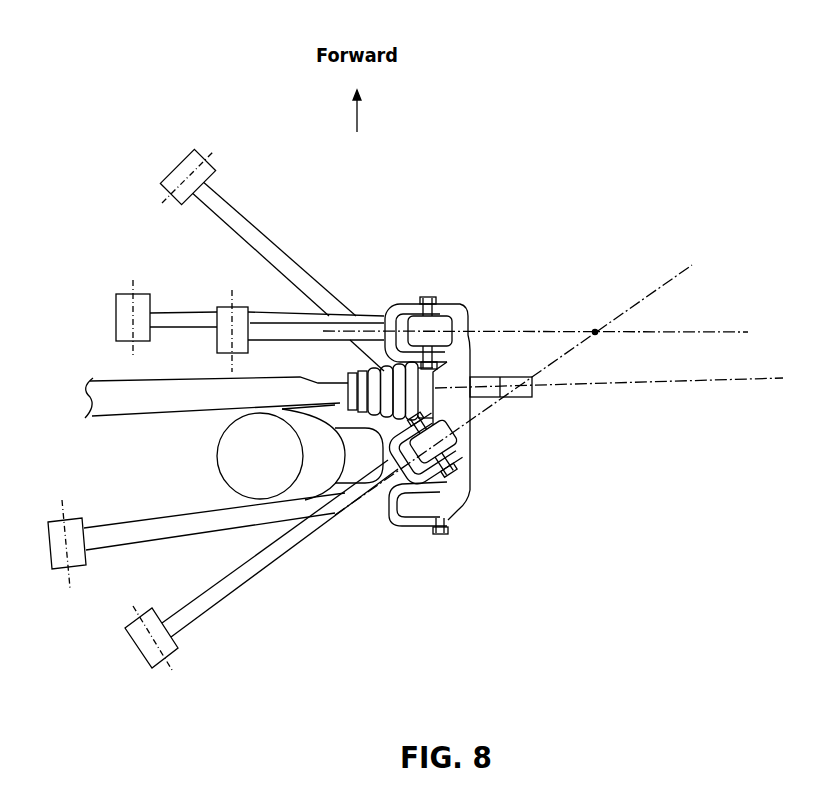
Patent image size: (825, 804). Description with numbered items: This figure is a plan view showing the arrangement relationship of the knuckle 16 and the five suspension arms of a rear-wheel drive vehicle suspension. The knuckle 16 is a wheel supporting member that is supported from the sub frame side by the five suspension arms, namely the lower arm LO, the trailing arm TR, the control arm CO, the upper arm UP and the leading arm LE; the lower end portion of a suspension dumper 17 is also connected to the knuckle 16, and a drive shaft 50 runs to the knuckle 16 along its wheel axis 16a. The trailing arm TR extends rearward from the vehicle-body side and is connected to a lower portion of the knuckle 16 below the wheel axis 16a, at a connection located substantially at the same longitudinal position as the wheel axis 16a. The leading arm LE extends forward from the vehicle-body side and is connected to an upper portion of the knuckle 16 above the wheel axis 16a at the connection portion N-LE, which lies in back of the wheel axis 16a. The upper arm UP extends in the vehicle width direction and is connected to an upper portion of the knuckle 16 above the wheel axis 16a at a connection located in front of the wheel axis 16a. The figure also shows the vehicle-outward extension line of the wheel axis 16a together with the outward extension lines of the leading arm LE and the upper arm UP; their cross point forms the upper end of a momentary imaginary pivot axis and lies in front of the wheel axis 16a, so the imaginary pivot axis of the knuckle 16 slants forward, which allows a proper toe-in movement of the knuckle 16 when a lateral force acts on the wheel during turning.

The trailing arm TR is at (236, 218).
The lower arm LO is at (177, 311).
The upper arm UP is at (283, 331).
The control arm CO is at (144, 531).
The leading arm LE is at (218, 595).
The drive shaft 50 is at (110, 387).
The suspension dumper 17 is at (225, 452).
The knuckle 16 is at (467, 488).
The wheel axis 16a is at (524, 389).
The connection portion of the leading arm N-LE is at (448, 443).